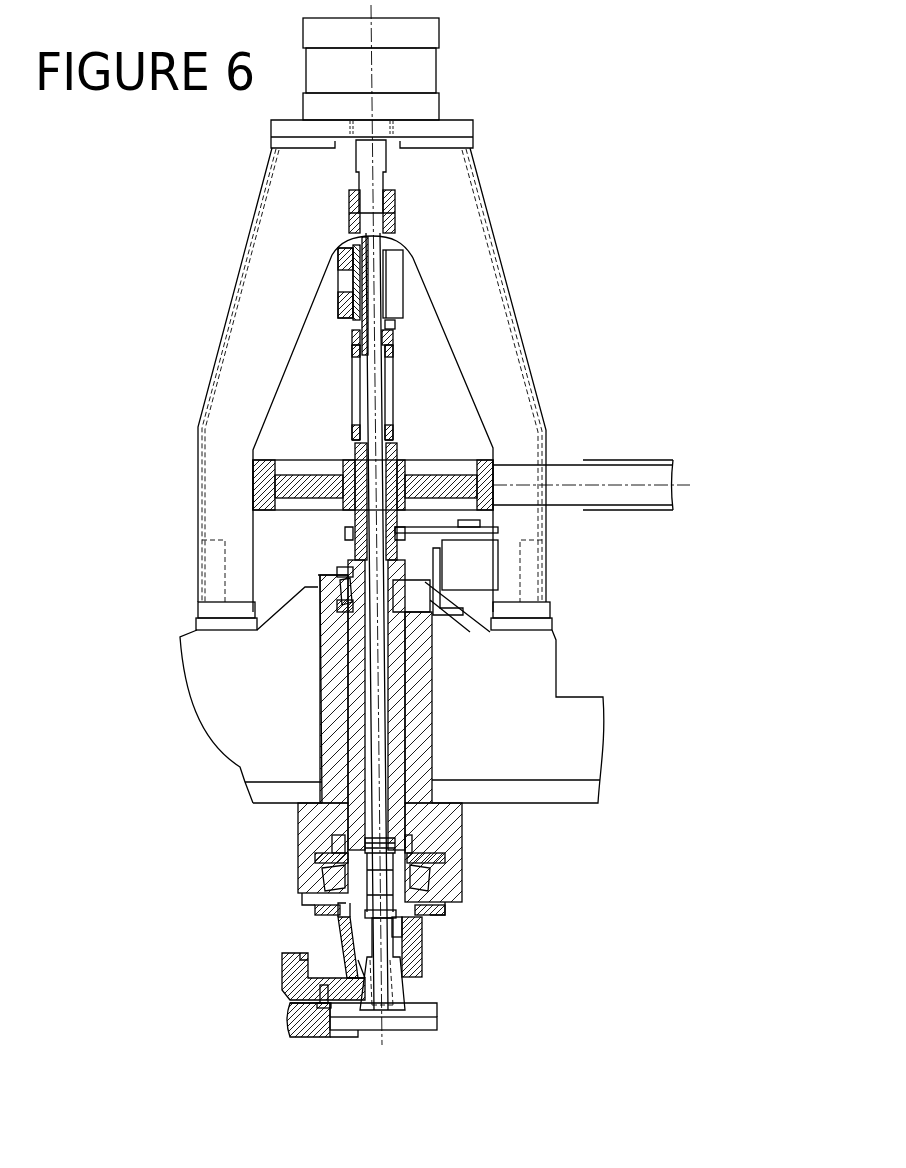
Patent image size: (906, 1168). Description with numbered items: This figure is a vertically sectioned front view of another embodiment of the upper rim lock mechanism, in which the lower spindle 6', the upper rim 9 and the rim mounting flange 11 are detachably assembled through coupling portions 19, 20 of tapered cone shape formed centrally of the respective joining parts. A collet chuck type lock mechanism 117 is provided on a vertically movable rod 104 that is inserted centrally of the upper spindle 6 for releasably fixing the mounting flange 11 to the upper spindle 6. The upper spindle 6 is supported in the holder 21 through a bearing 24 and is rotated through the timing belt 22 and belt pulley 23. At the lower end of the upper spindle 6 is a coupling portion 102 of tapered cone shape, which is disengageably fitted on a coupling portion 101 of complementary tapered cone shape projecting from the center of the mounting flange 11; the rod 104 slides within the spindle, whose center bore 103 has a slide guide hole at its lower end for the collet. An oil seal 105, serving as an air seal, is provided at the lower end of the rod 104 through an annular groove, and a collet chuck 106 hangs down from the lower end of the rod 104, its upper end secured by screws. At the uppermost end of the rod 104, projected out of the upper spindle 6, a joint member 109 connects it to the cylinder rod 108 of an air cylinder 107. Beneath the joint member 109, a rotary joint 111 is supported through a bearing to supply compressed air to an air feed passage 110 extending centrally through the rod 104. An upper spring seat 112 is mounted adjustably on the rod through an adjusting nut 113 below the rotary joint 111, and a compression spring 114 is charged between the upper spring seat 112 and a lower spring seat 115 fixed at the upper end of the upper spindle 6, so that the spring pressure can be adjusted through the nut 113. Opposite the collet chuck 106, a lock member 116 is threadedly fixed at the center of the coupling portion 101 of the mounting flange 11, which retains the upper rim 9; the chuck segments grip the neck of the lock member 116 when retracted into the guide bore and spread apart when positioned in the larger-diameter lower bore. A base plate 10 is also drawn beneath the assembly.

The air cylinder 107 is at (430, 31).
The cylinder rod 108 is at (387, 158).
The joint member 109 is at (396, 206).
The air feed passage 110 is at (378, 308).
The rotary joint 111 is at (338, 262).
The upper spring seat 112 is at (394, 343).
The adjusting nut 113 is at (393, 326).
The compression spring 114 is at (394, 386).
The lower spring seat 115 is at (391, 438).
The collet chuck type lock mechanism 117 is at (427, 230).
The belt pulley 23 is at (418, 462).
The timing belt 22 is at (557, 465).
The bearing 24 is at (336, 603).
The vertically movable rod 104 is at (386, 658).
The center bore 103 is at (393, 717).
The holder 21 is at (298, 820).
The oil seal 105 is at (396, 845).
The collet chuck 106 is at (400, 877).
The lock member 116 is at (398, 933).
The coupling portion 101 is at (403, 945).
The coupling portion 102 is at (412, 956).
The upper spindle 6 is at (324, 940).
The coupling portion 20 is at (346, 974).
The coupling portion 19 is at (366, 978).
The upper rim 9 is at (283, 967).
The rim mounting flange 11 is at (319, 994).
The base plate 10 is at (283, 1025).
The lower spindle 6' is at (410, 1006).